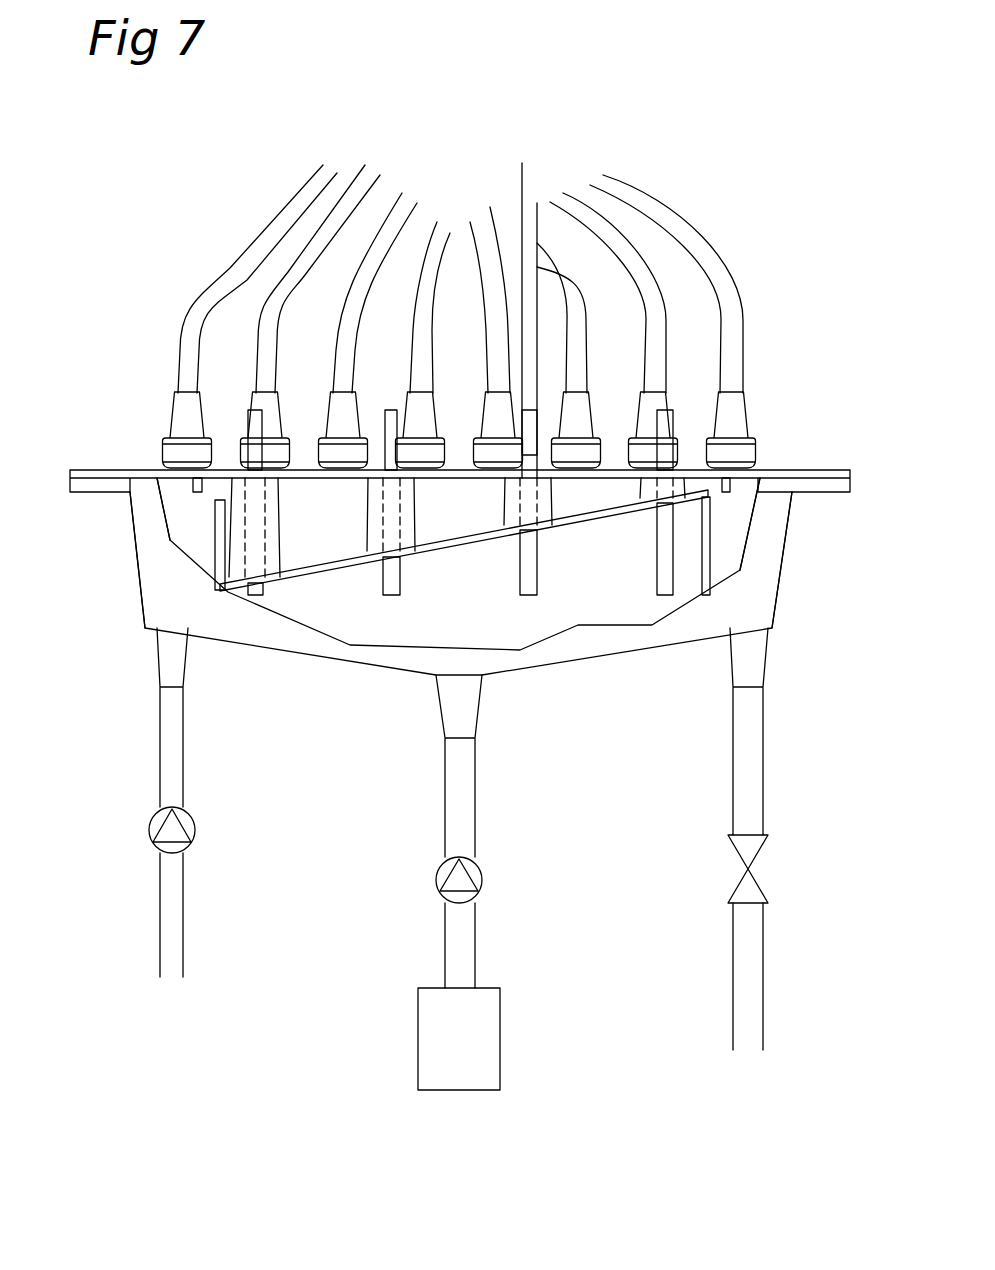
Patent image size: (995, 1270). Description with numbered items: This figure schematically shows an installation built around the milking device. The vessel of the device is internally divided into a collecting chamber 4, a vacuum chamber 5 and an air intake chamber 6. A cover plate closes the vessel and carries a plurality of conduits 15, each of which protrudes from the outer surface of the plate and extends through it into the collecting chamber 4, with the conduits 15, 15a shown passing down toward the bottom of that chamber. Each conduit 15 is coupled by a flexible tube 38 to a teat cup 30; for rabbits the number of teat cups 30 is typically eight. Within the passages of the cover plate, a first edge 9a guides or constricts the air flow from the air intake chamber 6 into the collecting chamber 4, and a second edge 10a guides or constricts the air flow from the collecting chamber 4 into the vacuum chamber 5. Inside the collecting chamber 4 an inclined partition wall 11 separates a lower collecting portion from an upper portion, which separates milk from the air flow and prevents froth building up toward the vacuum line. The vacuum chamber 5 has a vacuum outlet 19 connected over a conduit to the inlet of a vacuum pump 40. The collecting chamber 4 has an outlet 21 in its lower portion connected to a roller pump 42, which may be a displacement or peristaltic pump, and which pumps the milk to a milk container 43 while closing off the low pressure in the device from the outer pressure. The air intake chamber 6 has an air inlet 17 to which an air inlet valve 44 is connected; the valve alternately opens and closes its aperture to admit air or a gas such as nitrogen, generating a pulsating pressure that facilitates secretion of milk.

The collecting chamber 4 is at (437, 613).
The vacuum chamber 5 is at (193, 532).
The air intake chamber 6 is at (720, 537).
The first edge 9a is at (193, 490).
The second edge 10a is at (727, 492).
The partition wall 11 is at (578, 520).
The conduit 15 is at (480, 381).
The pin rod 15a is at (393, 410).
The air inlet 17 is at (748, 647).
The vacuum outlet 19 is at (170, 662).
The outlet 21 is at (460, 700).
The teat cup 30 is at (236, 388).
The flexible tube 38 is at (590, 180).
The vacuum pump 40 is at (163, 832).
The roller pump 42 is at (467, 882).
The milk container 43 is at (485, 1008).
The air inlet valve 44 is at (747, 853).